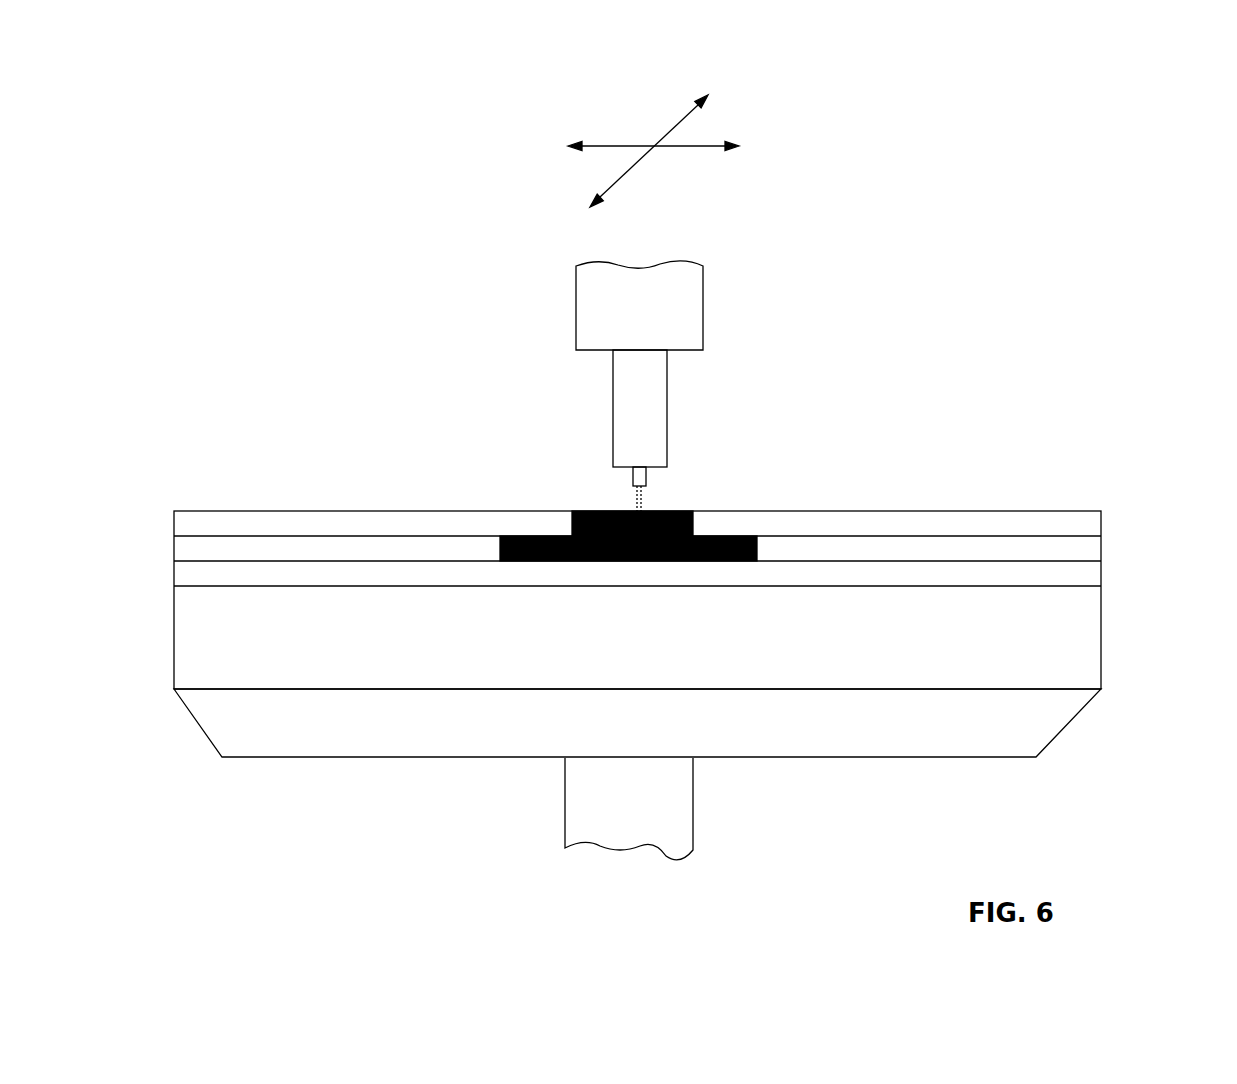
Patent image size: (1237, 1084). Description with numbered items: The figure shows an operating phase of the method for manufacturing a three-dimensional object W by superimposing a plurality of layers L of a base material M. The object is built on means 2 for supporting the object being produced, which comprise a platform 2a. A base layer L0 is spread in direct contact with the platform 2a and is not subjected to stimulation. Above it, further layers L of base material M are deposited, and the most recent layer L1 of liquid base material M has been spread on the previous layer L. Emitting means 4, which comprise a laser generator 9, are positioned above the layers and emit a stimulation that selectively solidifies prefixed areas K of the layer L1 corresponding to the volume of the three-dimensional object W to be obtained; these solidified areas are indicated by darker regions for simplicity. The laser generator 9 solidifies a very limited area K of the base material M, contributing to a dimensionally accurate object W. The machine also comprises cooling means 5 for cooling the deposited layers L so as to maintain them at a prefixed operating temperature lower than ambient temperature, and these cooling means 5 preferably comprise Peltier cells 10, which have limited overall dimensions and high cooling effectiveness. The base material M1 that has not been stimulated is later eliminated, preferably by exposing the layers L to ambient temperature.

The emitting means 4 is at (777, 330).
The laser generator 9 is at (691, 465).
The prefixed area K is at (597, 513).
The three-dimensional object W is at (708, 505).
The base material M is at (869, 500).
The non-stimulated base material M1 is at (987, 528).
The layer of liquid base material L1 is at (1131, 525).
The layer L is at (1131, 552).
The base layer L0 is at (1131, 578).
The Peltier cells 10 is at (1040, 634).
The cooling means 5 is at (705, 547).
The supporting means 2 is at (637, 788).
The platform 2a is at (913, 730).